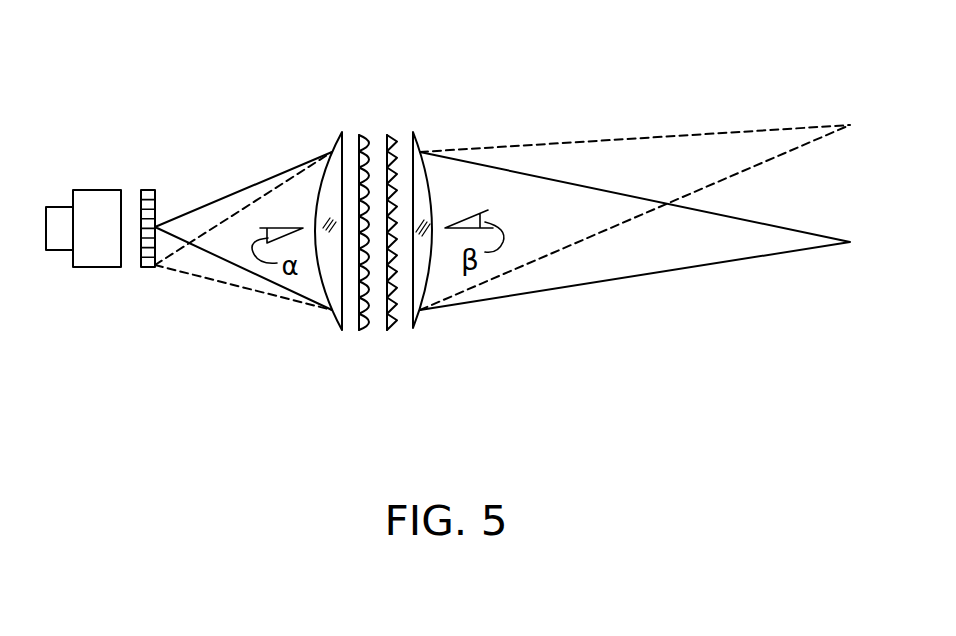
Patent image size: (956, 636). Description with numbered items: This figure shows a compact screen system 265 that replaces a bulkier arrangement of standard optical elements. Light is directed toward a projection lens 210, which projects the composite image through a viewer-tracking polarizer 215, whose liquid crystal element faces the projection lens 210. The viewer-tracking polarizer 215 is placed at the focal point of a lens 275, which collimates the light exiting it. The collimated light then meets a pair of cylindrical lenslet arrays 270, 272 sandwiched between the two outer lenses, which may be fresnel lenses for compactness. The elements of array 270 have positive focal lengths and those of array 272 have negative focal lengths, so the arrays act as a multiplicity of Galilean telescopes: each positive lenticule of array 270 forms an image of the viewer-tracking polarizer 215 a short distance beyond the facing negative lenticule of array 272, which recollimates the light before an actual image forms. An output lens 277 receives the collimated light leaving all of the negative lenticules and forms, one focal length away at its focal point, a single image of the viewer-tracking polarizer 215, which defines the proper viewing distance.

The projection lens 210 is at (91, 186).
The viewer-tracking polarizer 215 is at (147, 186).
The screen system 265 is at (378, 104).
The cylindrical lenslet array 270 is at (360, 331).
The cylindrical lenslet array 272 is at (390, 331).
The lens 275 is at (340, 133).
The output lens 277 is at (413, 133).